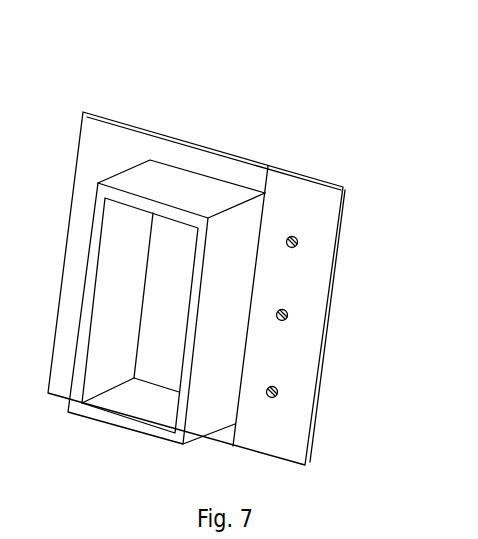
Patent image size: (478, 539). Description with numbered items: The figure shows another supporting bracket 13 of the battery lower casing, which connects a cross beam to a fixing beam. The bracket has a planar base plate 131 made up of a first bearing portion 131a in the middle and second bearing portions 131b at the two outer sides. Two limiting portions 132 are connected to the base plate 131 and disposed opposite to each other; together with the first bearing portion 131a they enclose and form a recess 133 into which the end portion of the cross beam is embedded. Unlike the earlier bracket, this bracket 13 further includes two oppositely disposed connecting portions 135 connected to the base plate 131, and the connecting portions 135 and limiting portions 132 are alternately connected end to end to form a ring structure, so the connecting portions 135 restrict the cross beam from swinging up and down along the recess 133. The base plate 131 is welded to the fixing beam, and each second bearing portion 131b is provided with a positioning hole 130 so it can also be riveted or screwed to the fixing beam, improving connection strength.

The supporting bracket 13 is at (238, 50).
The positioning hole 130 is at (279, 389).
The base plate 131 is at (365, 258).
The first bearing portion 131a is at (231, 154).
The second bearing portion 131b is at (138, 127).
The limiting portion 132 is at (92, 283).
The recess 133 is at (185, 318).
The connecting portion 135 is at (132, 182).